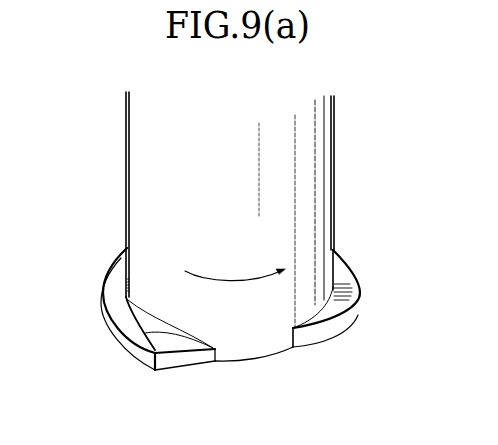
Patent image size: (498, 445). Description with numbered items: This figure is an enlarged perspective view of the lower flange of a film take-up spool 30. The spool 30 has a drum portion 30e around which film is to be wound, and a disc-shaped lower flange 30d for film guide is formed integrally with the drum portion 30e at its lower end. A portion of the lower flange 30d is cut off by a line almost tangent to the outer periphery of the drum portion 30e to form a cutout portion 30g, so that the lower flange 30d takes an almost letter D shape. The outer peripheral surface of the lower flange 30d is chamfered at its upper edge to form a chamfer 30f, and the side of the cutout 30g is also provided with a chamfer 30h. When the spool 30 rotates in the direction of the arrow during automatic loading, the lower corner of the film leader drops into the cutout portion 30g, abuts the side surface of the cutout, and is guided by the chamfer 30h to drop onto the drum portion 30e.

The film take-up spool 30 is at (299, 160).
The drum portion 30e is at (307, 216).
The lower flange 30d is at (350, 306).
The chamfer 30f is at (108, 316).
The cutout portion 30g is at (266, 365).
The chamfer 30h is at (187, 347).